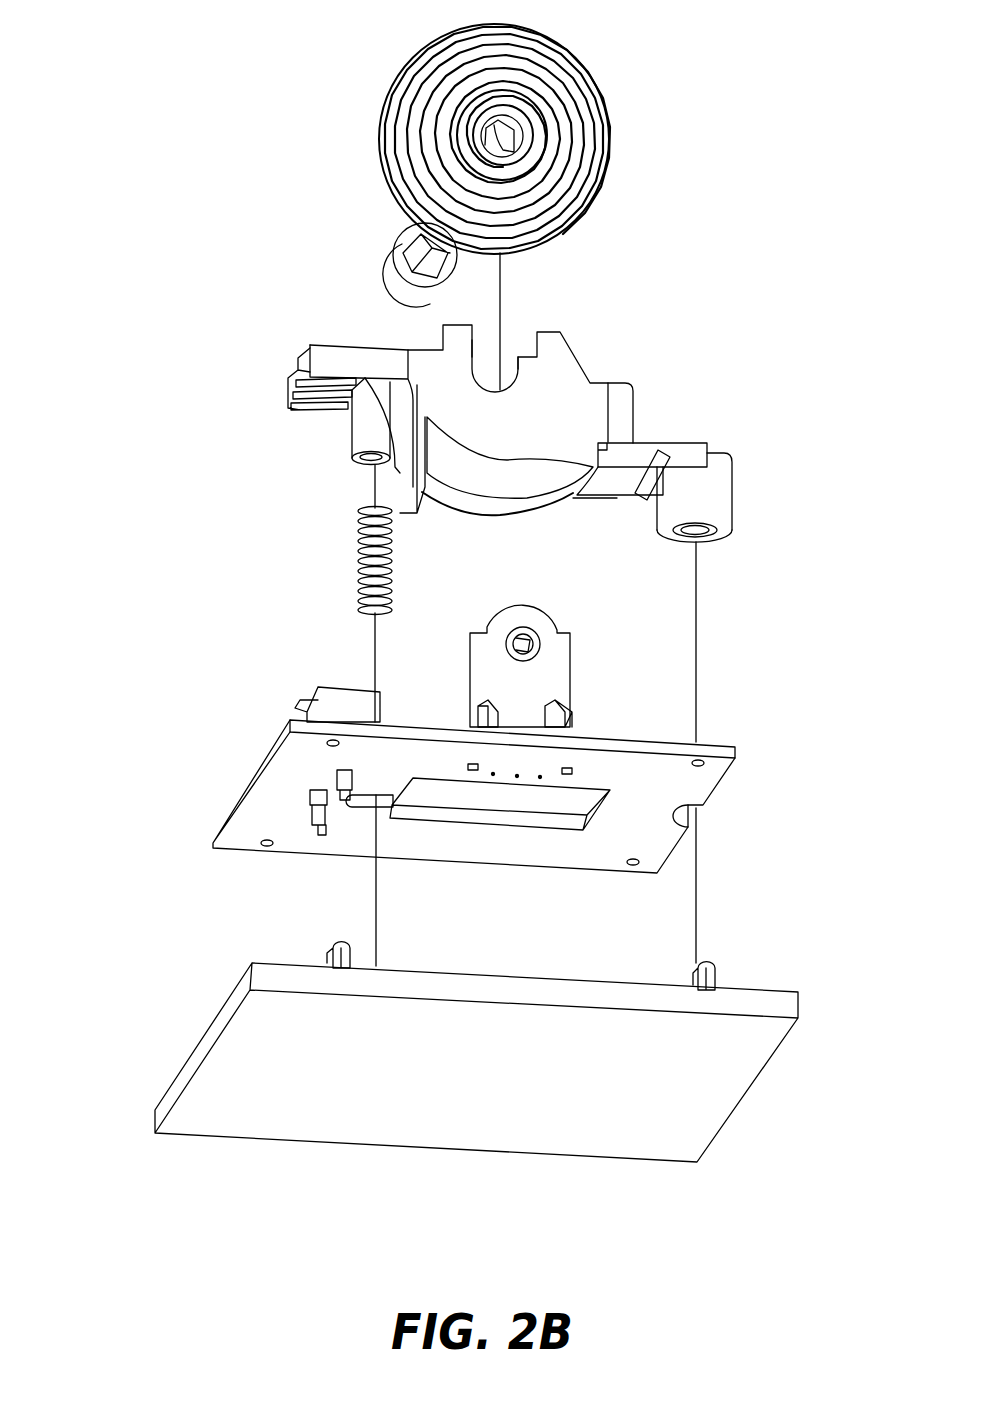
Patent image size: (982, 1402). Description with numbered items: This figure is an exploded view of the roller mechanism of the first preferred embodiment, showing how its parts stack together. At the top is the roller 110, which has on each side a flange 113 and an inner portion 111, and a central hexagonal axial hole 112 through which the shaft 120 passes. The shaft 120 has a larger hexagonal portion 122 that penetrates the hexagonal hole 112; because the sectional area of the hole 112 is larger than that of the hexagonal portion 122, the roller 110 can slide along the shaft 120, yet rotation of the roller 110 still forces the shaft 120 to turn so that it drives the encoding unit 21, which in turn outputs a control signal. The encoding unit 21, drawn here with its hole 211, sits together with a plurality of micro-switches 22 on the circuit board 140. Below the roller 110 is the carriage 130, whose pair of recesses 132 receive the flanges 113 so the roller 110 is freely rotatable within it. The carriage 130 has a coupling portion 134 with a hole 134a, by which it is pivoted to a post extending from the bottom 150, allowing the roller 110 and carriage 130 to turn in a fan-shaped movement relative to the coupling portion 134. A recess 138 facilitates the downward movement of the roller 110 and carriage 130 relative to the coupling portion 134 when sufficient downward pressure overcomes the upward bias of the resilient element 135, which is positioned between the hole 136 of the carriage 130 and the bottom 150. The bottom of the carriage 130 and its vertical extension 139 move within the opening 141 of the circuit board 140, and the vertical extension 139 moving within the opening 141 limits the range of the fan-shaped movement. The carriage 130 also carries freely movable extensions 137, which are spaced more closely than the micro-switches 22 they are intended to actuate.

The roller 110 is at (607, 113).
The inner portion 111 is at (537, 155).
The hexagonal axial hole 112 is at (483, 117).
The flange 113 is at (527, 110).
The shaft 120 is at (379, 236).
The larger hexagonal portion 122 is at (420, 262).
The carriage 130 is at (663, 380).
The recesses 132 is at (507, 388).
The coupling portion 134 is at (718, 503).
The post hole 134a is at (707, 548).
The resilient element 135 is at (358, 575).
The hole 136 is at (362, 468).
The freely movable extensions 137 is at (297, 420).
The recess 138 is at (633, 500).
The vertical extension 139 is at (420, 515).
The circuit board 140 is at (225, 790).
The opening 141 is at (523, 802).
The bottom 150 is at (177, 1048).
The encoding unit 21 is at (572, 670).
The hole 211 is at (530, 640).
The micro-switches 22 is at (296, 698).